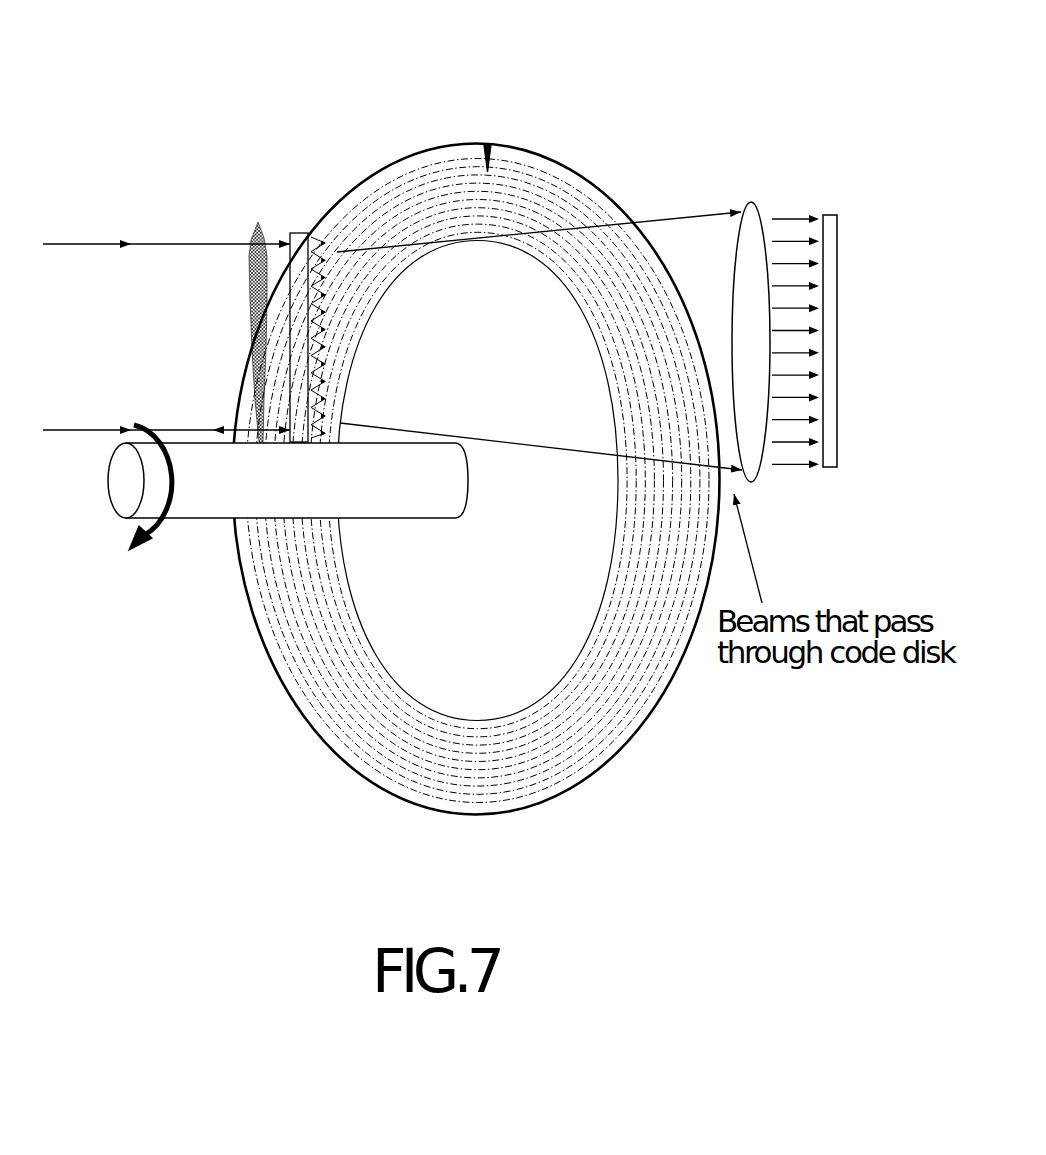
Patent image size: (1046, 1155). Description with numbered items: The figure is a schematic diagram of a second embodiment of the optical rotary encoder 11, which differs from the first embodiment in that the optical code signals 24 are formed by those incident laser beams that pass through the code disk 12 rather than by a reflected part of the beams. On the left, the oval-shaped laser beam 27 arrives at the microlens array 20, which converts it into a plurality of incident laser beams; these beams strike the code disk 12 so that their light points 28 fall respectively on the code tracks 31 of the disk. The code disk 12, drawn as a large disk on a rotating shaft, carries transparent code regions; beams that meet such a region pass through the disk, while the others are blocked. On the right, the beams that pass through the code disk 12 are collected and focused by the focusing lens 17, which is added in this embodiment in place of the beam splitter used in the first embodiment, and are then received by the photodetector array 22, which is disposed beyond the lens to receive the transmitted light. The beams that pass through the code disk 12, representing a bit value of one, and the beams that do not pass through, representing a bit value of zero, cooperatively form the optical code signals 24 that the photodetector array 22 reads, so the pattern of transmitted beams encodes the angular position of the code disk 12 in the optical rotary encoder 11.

The optical rotary encoder 11 is at (200, 100).
The code disk 12 is at (586, 178).
The focusing lens 17 is at (752, 202).
The microlens array 20 is at (301, 232).
The photodetector array 22 is at (836, 228).
The optical code signals 24 is at (792, 480).
The oval-shaped laser beam 27 is at (247, 288).
The light points 28 is at (345, 288).
The code tracks 31 is at (488, 145).